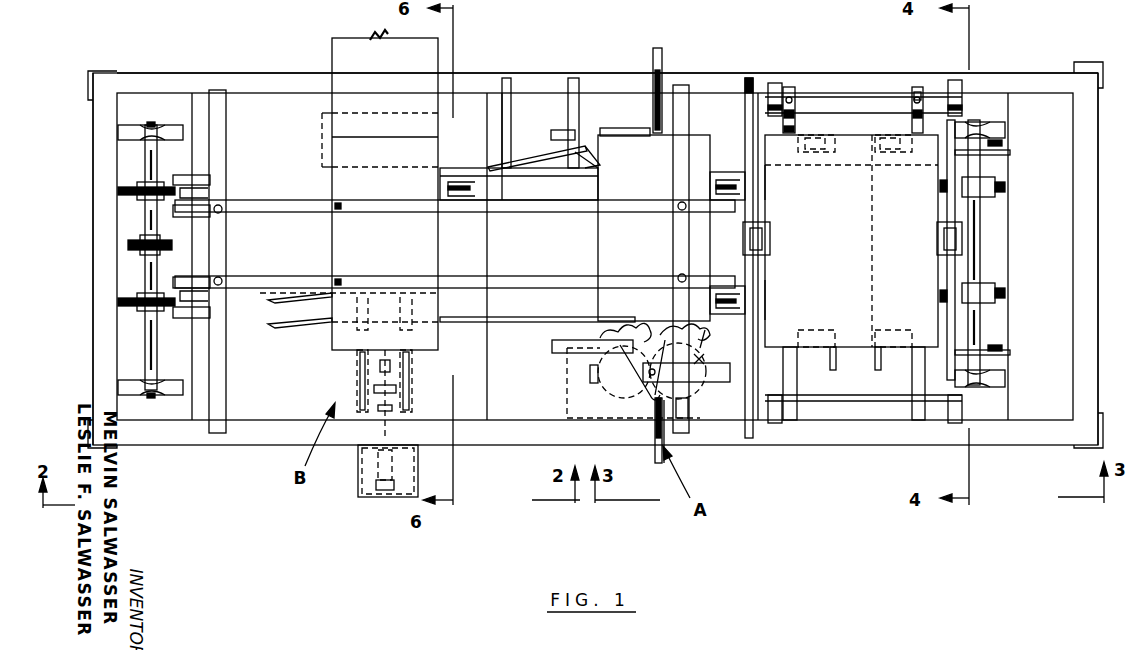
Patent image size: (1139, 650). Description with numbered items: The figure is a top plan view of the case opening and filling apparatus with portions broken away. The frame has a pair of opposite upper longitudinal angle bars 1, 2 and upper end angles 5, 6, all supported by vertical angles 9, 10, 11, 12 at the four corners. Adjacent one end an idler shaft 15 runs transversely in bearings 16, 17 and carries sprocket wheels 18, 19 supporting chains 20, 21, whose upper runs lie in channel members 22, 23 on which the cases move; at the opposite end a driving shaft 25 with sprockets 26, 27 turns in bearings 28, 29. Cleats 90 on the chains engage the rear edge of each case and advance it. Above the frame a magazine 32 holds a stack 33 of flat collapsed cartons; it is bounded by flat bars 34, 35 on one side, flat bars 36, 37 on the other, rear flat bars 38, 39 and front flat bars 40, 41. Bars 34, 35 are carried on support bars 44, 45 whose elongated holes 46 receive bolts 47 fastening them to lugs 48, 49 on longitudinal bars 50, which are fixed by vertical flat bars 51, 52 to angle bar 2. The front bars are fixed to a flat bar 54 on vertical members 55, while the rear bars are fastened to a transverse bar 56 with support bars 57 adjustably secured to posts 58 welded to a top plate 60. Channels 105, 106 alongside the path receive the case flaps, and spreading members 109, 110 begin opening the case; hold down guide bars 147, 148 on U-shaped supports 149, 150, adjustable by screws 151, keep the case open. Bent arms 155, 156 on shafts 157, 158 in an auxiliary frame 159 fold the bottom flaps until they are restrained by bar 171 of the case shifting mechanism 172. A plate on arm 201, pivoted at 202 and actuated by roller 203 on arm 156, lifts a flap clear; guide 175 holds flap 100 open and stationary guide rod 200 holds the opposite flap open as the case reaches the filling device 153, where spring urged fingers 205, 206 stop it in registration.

The upper longitudinally extending angle bar 1 is at (1018, 445).
The upper longitudinally extending angle bar 2 is at (1000, 73).
The upper end angle 5 is at (1098, 200).
The upper end angle 6 is at (93, 250).
The vertical angle 9 is at (1088, 62).
The vertical angle 10 is at (1088, 448).
The vertical angle 11 is at (102, 71).
The vertical angle 12 is at (110, 448).
The idler shaft 15 is at (980, 262).
The bearing 16 is at (985, 387).
The bearing 17 is at (1000, 125).
The sprocket wheel 18 is at (1000, 195).
The sprocket wheel 19 is at (1005, 292).
The chain 20 is at (118, 191).
The chain 21 is at (118, 302).
The channel member 22 is at (562, 320).
The channel member 23 is at (510, 172).
The driving shaft 25 is at (157, 165).
The sprocket 26 is at (140, 200).
The sprocket 27 is at (140, 295).
The bearing 28 is at (140, 125).
The bearing 29 is at (165, 380).
The magazine 32 is at (848, 110).
The stack of flat collapsed cartons 33 is at (826, 233).
The vertically extending flat bar 34 is at (798, 141).
The vertically extending flat bar 35 is at (912, 141).
The flat bar 36 is at (795, 357).
The flat bar 37 is at (912, 360).
The rear flat bar 38 is at (940, 186).
The rear flat bar 39 is at (940, 297).
The front flat bar 40 is at (765, 182).
The front flat bar 41 is at (765, 298).
The horizontally extending support bar 44 is at (785, 83).
The horizontally extending support bar 45 is at (916, 87).
The elongated hole 46 is at (795, 100).
The bolt 47 is at (797, 106).
The lug 48 is at (797, 122).
The lug 49 is at (913, 96).
The longitudinally extending bar 50 is at (845, 420).
The vertical flat bar 51 is at (782, 117).
The vertical flat bar 52 is at (963, 105).
The horizontally extending flat bar 54 is at (756, 150).
The vertically disposed member 55 is at (750, 78).
The transverse bar 56 is at (947, 332).
The rearwardly extending support bar 57 is at (1010, 153).
The vertical post 58 is at (1002, 143).
The top plate 60 is at (1027, 248).
The cleat 90 is at (720, 178).
The flap 100 is at (578, 160).
The inwardly opening channel 105 is at (552, 347).
The inwardly opening channel 106 is at (575, 135).
The spreading member 109 is at (665, 432).
The spreading member 110 is at (653, 110).
The hold down guide bar 147 is at (553, 212).
The hold down guide bar 148 is at (558, 276).
The U-shaped support 149 is at (226, 135).
The U-shaped support 150 is at (689, 125).
The adjustment screw 151 is at (222, 213).
The case filling device 153 is at (470, 45).
The bent arm 155 is at (645, 400).
The bent arm 156 is at (712, 348).
The vertically disposed shaft 157 is at (606, 390).
The vertically disposed shaft 158 is at (696, 392).
The auxiliary frame 159 is at (590, 375).
The horizontally extending bar 171 is at (285, 328).
The case shifting mechanism 172 is at (340, 377).
The guide 175 is at (540, 158).
The stationary guide rod 200 is at (660, 325).
The arm 201 is at (655, 440).
The pivot 202 is at (686, 372).
The roller 203 is at (688, 412).
The spring urged finger 205 is at (320, 215).
The spring urged finger 206 is at (322, 277).